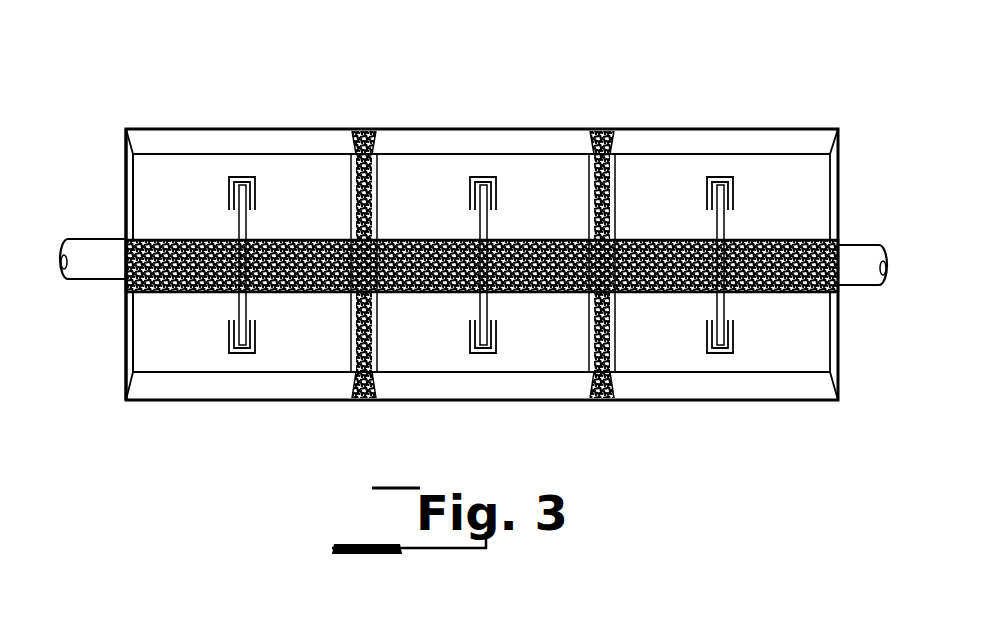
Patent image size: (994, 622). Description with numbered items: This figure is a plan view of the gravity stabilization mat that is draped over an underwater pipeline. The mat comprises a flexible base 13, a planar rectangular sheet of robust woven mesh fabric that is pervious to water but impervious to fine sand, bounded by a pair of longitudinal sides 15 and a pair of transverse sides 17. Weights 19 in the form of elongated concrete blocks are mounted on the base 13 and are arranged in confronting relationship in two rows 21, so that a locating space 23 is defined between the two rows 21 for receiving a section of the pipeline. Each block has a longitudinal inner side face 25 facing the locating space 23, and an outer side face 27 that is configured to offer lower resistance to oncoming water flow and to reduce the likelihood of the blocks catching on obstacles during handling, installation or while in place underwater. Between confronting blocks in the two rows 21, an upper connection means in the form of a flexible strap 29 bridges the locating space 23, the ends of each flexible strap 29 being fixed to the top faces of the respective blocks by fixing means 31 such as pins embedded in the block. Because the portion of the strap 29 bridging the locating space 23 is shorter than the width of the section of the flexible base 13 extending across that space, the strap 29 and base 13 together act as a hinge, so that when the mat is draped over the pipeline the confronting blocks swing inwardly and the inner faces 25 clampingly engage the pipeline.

The flexible base 13 is at (365, 128).
The longitudinal side 15 is at (600, 128).
The transverse side 17 is at (130, 362).
The weight 19 is at (205, 170).
The row 21 is at (118, 199).
The locating space 23 is at (123, 262).
The inner side face 25 is at (797, 238).
The outer side face 27 is at (675, 140).
The flexible strap 29 is at (236, 303).
The fixing means 31 is at (500, 175).